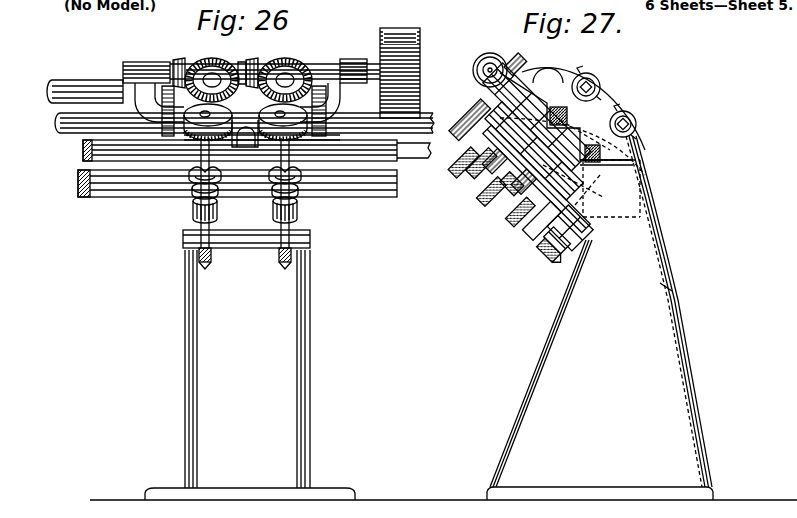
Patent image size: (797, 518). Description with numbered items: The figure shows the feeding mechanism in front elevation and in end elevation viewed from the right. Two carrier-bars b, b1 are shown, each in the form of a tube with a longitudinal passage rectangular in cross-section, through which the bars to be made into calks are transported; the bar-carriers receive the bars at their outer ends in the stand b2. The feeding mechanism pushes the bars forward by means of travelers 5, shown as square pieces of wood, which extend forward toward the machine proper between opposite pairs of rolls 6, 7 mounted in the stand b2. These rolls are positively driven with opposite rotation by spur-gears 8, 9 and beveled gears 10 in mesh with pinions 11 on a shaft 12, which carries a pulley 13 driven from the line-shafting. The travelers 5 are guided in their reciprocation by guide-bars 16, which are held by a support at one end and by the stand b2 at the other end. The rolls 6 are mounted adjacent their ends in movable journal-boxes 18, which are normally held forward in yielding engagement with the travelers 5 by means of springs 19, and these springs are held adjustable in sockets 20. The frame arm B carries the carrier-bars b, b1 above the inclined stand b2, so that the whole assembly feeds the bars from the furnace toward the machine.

In FIG. 26, the travelers 5 is at (84, 150).
In FIG. 27, the travelers 5 is at (523, 165).
In FIG. 26, the rolls 6 is at (198, 209).
In FIG. 27, the rolls 6 is at (505, 172).
In FIG. 27, the rolls 7 is at (600, 166).
In FIG. 26, the spur-gears 8 is at (268, 98).
In FIG. 27, the spur-gears 8 is at (470, 110).
In FIG. 27, the spur-gears 9 is at (527, 70).
In FIG. 26, the beveled gears 10 is at (195, 57).
In FIG. 27, the beveled gears 10 is at (522, 68).
In FIG. 26, the pinions 11 is at (187, 62).
In FIG. 27, the pinions 11 is at (483, 60).
In FIG. 26, the shaft 12 is at (297, 64).
In FIG. 27, the shaft 12 is at (477, 70).
In FIG. 26, the pulley 13 is at (412, 30).
In FIG. 26, the guide-bars 16 is at (402, 125).
In FIG. 27, the guide-bars 16 is at (570, 110).
In FIG. 26, the movable journal-boxes 18 is at (197, 232).
In FIG. 27, the springs 19 is at (540, 250).
In FIG. 26, the sockets 20 is at (197, 176).
In FIG. 27, the sockets 20 is at (548, 263).
In FIG. 27, the curved frame arm B is at (617, 277).
In FIG. 27, the carrier-bar b is at (634, 122).
In FIG. 27, the carrier-bar b1 is at (593, 75).
In FIG. 27, the stand b2 is at (650, 290).